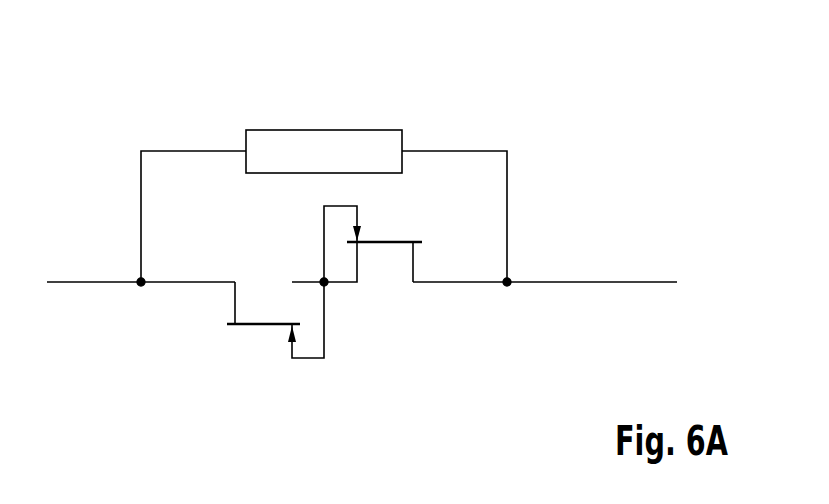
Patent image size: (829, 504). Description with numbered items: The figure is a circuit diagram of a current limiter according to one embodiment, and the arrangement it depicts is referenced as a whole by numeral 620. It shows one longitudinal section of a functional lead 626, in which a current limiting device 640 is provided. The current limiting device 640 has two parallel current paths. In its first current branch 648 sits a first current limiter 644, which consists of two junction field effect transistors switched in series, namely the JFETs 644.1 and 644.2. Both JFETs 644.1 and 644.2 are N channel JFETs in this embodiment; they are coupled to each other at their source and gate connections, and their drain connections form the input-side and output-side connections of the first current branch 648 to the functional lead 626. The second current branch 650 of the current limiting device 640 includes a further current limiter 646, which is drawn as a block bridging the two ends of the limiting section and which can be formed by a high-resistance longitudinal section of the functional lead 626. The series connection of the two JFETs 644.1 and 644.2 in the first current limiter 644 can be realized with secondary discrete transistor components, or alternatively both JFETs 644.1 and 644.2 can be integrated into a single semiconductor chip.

The circuit 620 is at (593, 117).
The functional lead 626 is at (627, 282).
The current limiting device 640 is at (250, 88).
The first current limiter 644 is at (329, 285).
The junction field effect transistor 644.1 is at (250, 326).
The junction field effect transistor 644.2 is at (400, 238).
The current limiter 646 is at (325, 130).
The first current branch 648 is at (172, 287).
The second current branch 650 is at (141, 181).